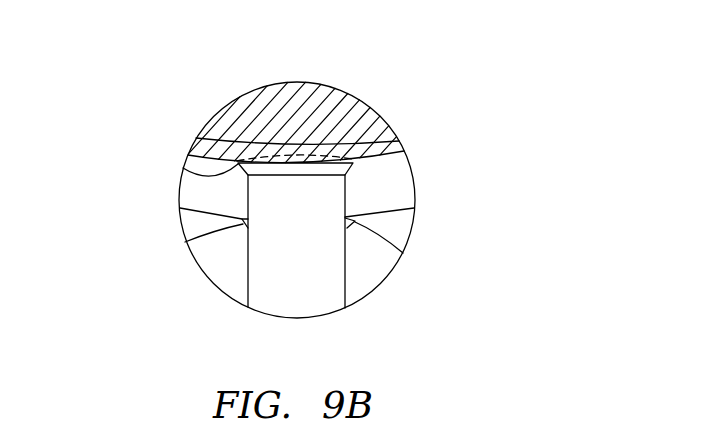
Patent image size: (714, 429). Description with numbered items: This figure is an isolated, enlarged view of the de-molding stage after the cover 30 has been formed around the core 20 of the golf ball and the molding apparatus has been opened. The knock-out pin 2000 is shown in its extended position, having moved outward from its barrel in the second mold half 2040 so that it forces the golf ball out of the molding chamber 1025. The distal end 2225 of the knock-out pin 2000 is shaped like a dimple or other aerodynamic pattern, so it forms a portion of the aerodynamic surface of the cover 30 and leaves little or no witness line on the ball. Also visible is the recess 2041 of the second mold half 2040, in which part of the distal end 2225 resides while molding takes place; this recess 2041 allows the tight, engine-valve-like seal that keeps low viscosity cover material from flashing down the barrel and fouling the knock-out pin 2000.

The core 20 is at (356, 94).
The cover 30 is at (399, 141).
The molding chamber 1025 is at (395, 188).
The distal end 2225 is at (183, 168).
The knock-out pin 2000 is at (317, 293).
The recess 2041 is at (185, 242).
The second mold half 2040 is at (218, 259).